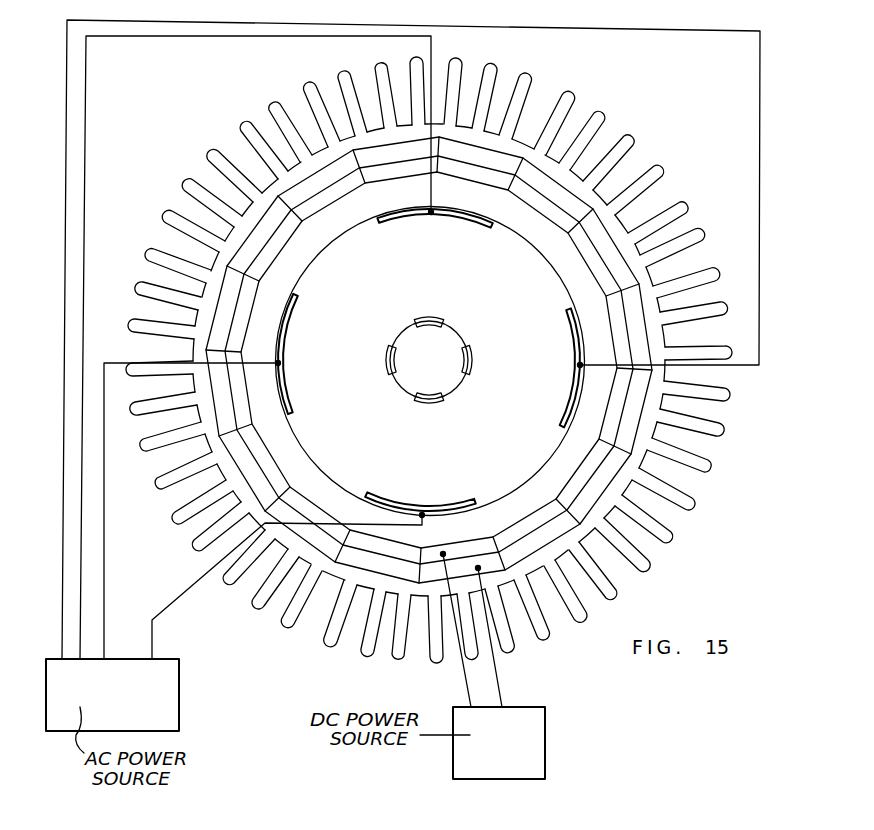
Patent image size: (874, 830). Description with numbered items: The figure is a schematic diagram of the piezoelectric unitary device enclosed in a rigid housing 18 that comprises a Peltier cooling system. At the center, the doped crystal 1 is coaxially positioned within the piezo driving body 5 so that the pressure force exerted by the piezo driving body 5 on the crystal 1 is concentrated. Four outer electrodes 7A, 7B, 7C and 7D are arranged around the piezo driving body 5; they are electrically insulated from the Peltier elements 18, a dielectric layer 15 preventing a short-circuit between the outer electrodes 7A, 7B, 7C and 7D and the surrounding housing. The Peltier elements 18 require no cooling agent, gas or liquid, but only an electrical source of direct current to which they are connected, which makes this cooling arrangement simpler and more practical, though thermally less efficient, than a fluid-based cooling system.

The doped crystal 1 is at (434, 372).
The piezo driving body 5 is at (394, 290).
The outer electrode 7A is at (413, 212).
The outer electrode 7B is at (574, 356).
The outer electrode 7C is at (398, 509).
The outer electrode 7D is at (283, 362).
The dielectric layer 15 is at (558, 258).
The rigid housing comprising Peltier elements 18 is at (684, 507).